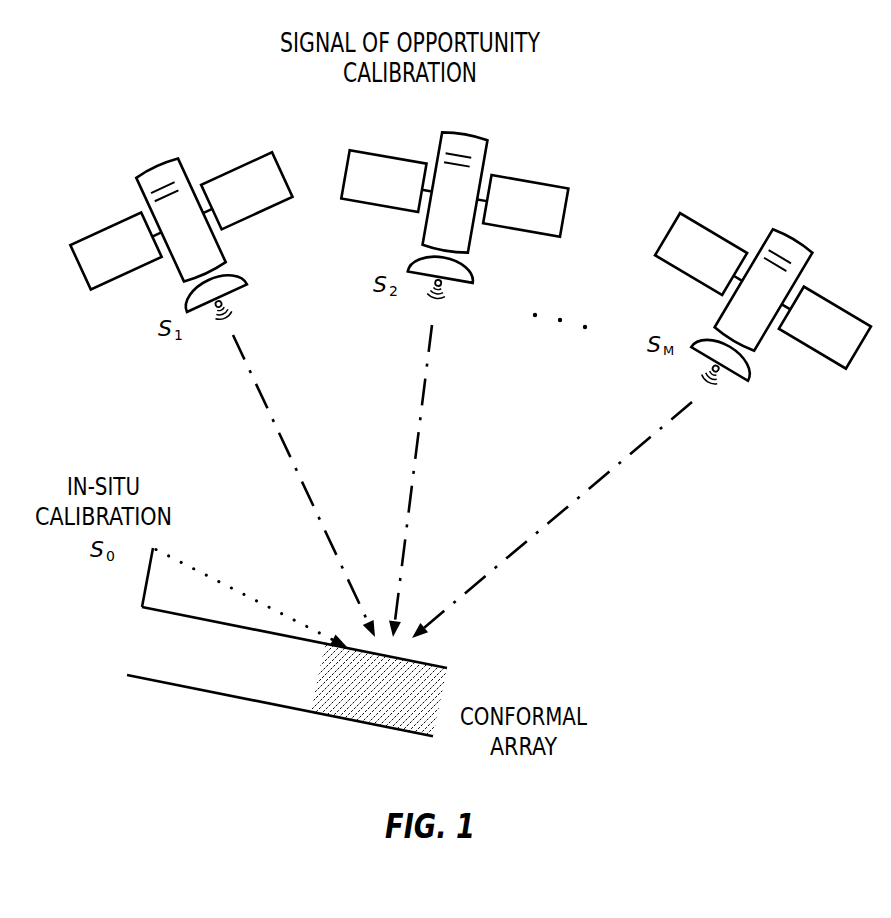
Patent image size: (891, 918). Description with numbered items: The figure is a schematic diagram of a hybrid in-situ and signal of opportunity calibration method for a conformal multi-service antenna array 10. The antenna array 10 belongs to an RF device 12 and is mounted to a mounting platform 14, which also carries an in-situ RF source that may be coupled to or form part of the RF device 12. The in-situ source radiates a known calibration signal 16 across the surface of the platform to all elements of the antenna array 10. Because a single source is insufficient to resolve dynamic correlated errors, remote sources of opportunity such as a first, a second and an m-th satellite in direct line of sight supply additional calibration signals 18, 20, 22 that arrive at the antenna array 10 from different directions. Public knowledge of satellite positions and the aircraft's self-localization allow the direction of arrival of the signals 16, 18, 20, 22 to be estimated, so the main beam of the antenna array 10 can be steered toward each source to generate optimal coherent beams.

The conformal multi-service antenna array 10 is at (362, 723).
The RF device 12 is at (384, 689).
The mounting platform 14 is at (172, 686).
The calibration signal 16 is at (183, 565).
The calibration signal 18 is at (253, 385).
The calibration signal 20 is at (422, 415).
The calibration signal 22 is at (632, 455).